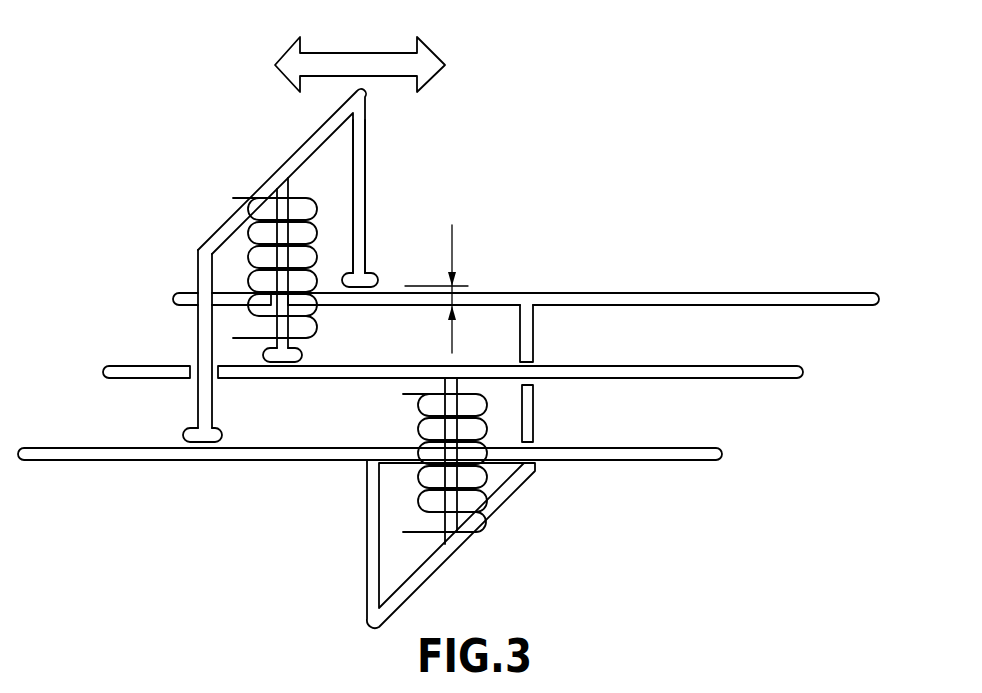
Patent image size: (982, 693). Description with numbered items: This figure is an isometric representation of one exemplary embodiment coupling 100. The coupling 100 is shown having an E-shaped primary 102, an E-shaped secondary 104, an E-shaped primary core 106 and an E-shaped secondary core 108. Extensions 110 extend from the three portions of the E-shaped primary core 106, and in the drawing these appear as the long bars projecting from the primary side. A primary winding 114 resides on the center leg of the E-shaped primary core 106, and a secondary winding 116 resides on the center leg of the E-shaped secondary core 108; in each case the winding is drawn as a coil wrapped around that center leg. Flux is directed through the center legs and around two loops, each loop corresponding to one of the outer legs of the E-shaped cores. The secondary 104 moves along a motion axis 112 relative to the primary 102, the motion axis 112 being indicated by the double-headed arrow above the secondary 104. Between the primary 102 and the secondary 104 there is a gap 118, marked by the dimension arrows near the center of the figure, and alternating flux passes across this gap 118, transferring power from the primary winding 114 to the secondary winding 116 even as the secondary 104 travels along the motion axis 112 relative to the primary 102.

The coupling 100 is at (758, 104).
The E-shaped primary 102 is at (543, 545).
The E-shaped secondary 104 is at (406, 140).
The E-shaped primary core 106 is at (535, 344).
The E-shaped secondary core 108 is at (367, 224).
The extensions 110 is at (755, 293).
The motion axis 112 is at (434, 55).
The primary winding 114 is at (490, 488).
The secondary winding 116 is at (316, 196).
The gap 118 is at (454, 250).